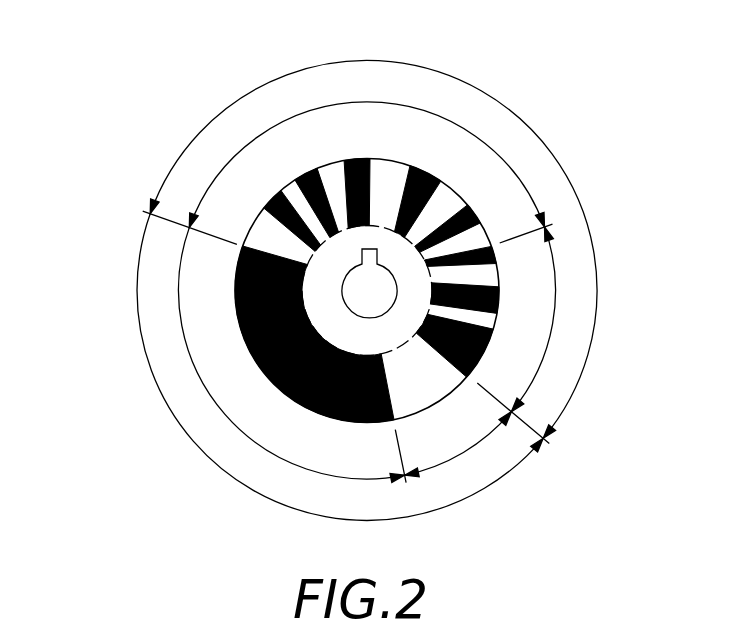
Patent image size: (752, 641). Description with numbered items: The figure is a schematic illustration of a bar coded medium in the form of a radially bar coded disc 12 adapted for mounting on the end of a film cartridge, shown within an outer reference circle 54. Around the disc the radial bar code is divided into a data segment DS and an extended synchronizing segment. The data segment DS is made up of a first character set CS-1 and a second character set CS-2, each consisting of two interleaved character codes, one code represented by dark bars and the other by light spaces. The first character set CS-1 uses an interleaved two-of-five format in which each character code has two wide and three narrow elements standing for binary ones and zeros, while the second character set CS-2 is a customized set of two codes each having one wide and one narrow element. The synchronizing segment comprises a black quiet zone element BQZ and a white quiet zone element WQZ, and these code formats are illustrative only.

The code disk 12 is at (256, 219).
The outer reference circle 54 is at (238, 482).
The first character set CS-1 is at (420, 105).
The second character set CS-2 is at (550, 337).
The data segment DS is at (563, 172).
The black quiet zone element BQZ is at (183, 335).
The white quiet zone element WQZ is at (471, 452).